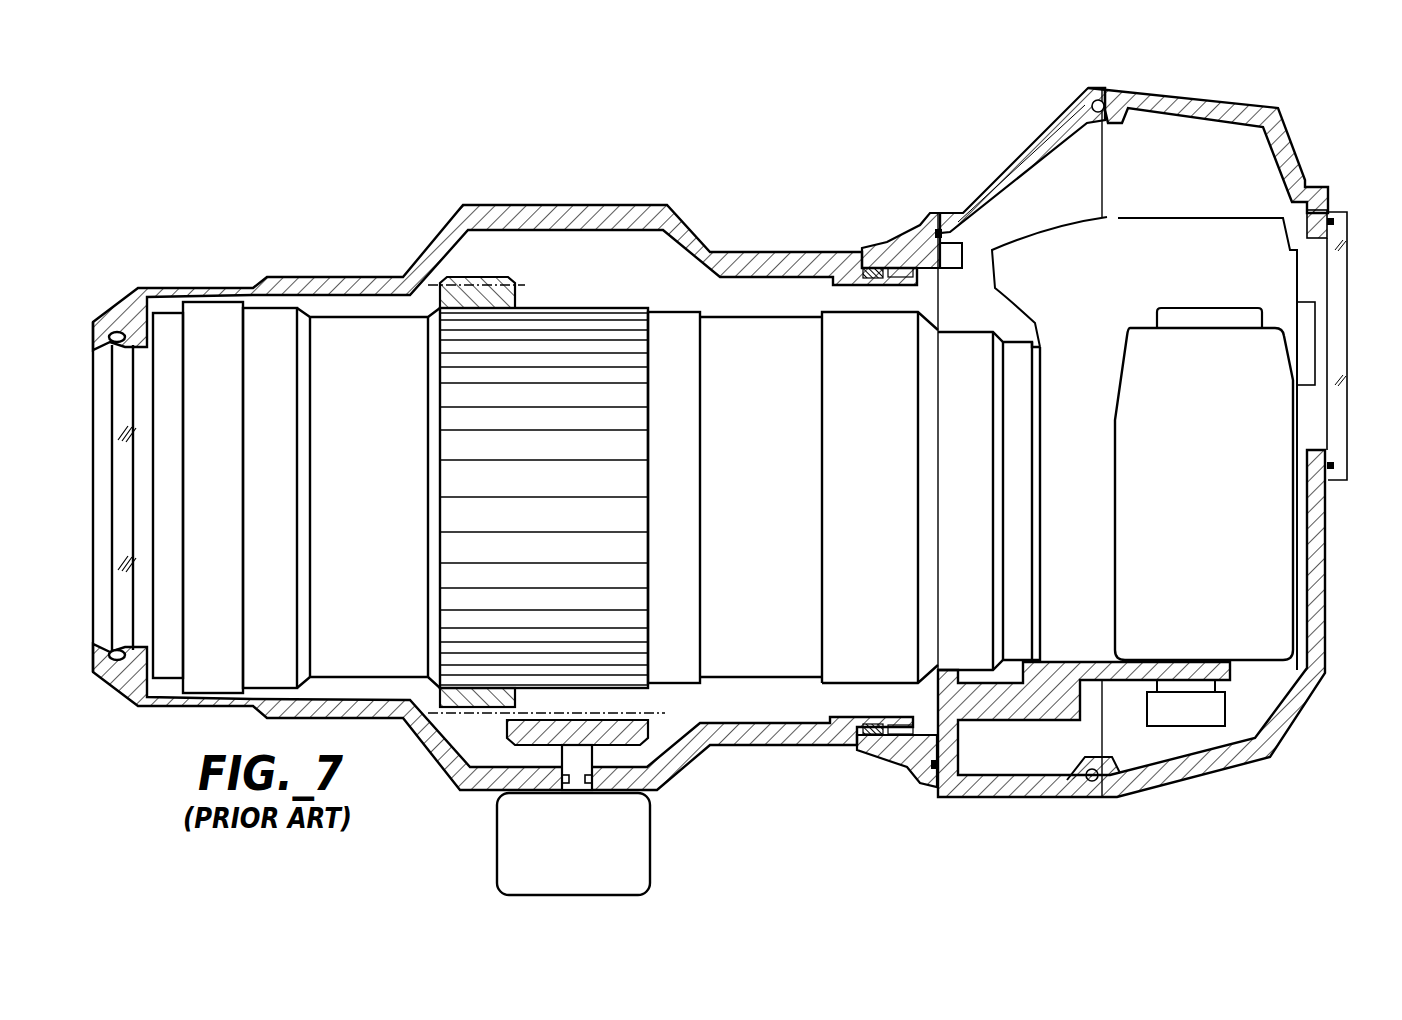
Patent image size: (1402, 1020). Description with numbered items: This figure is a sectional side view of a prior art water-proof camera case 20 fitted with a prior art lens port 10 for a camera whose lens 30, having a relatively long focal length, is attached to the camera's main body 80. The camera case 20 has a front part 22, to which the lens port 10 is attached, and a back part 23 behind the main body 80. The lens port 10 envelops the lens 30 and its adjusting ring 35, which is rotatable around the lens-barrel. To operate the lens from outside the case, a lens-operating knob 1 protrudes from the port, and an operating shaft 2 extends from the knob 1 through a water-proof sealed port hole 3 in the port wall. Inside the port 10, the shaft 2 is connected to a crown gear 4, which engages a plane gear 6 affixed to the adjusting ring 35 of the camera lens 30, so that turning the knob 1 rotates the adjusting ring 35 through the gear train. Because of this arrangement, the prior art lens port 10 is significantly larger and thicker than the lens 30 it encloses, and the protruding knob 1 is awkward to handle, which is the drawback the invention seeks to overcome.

The lens-operating knob 1 is at (632, 850).
The operating shaft 2 is at (572, 755).
The water-proof sealed port hole 3 is at (595, 778).
The crown gear 4 is at (520, 732).
The plane gear 6 is at (452, 296).
The lens port 10 is at (566, 517).
The water-proof camera case 20 is at (1164, 410).
The front part of the camera case 22 is at (1030, 150).
The back part of the camera case 23 is at (1228, 100).
The lens 30 is at (205, 318).
The adjusting ring 35 is at (593, 373).
The main body 80 is at (1273, 547).